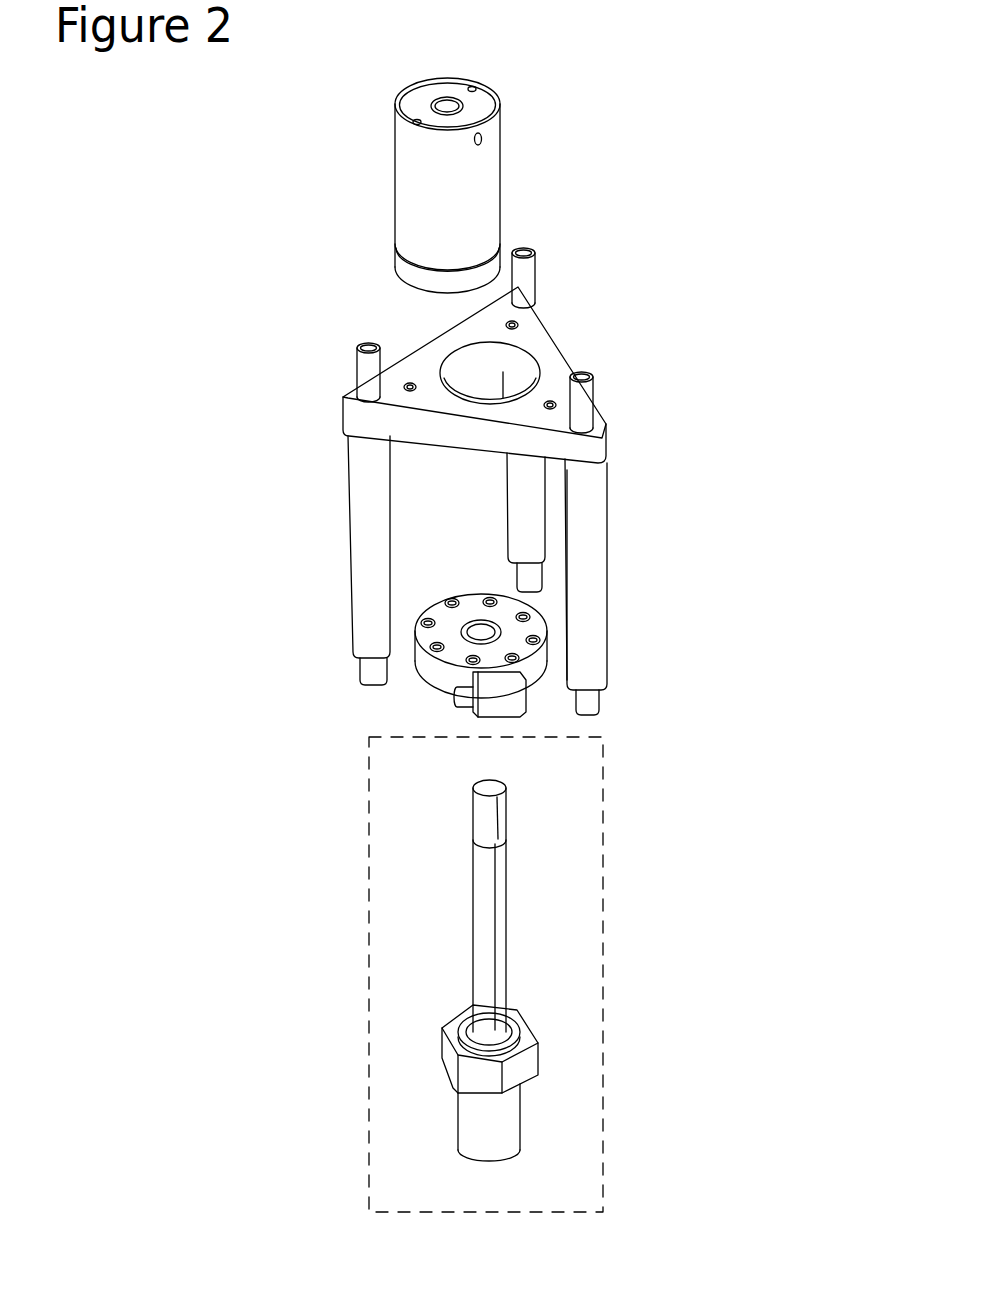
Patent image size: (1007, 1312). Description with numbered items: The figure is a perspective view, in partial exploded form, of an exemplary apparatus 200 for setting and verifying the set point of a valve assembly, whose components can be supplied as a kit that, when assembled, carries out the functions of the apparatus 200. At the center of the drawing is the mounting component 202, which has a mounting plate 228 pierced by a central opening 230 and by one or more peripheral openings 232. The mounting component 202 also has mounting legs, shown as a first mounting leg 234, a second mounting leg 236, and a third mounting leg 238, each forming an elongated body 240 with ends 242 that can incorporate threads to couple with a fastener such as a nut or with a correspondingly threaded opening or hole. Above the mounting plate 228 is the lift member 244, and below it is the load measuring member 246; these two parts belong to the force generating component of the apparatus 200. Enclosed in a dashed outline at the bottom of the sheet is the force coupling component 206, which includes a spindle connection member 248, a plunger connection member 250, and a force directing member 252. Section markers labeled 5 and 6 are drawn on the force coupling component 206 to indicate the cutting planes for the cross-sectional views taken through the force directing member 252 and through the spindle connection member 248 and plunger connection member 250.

The apparatus 200 is at (712, 91).
The mounting component 202 is at (723, 275).
The force coupling component 206 is at (626, 893).
The mounting plate 228 is at (566, 341).
The central opening 230 is at (503, 366).
The peripheral openings 232 is at (600, 417).
The first mounting leg 234 is at (610, 560).
The second mounting leg 236 is at (343, 530).
The third mounting leg 238 is at (502, 518).
The elongated body 240 is at (600, 517).
The ends 242 is at (597, 376).
The lift member 244 is at (505, 157).
The load measuring member 246 is at (436, 692).
The spindle connection member 248 is at (508, 932).
The plunger connection member 250 is at (523, 1113).
The force directing member 252 is at (542, 1041).
The section line 5- 5 is at (440, 1013).
The section line 6- 6 is at (489, 783).